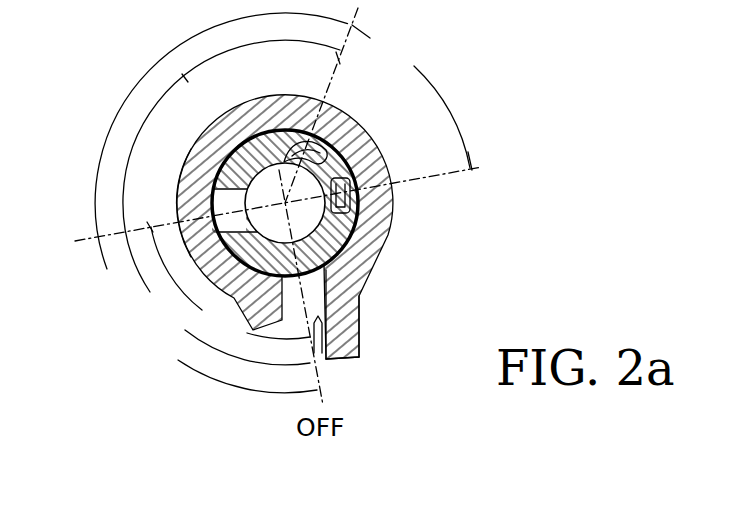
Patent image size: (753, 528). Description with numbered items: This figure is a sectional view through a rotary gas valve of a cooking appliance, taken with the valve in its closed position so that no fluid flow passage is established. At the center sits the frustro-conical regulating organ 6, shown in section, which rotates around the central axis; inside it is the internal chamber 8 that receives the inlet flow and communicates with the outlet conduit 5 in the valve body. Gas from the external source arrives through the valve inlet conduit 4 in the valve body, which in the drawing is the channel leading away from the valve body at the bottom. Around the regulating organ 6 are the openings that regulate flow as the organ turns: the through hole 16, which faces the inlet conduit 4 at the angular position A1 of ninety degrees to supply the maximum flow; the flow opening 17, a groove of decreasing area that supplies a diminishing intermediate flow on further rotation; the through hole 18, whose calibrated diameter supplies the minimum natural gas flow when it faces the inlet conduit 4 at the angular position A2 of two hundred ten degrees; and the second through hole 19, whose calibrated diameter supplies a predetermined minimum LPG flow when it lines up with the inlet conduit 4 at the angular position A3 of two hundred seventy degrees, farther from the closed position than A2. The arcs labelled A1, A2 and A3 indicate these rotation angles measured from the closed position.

The valve inlet conduit 4 is at (312, 300).
The outlet conduit 5 is at (352, 168).
The regulating organ 6 is at (338, 235).
The internal chamber 8 is at (279, 160).
The through hole 16 is at (177, 192).
The flow opening 17 is at (241, 159).
The through hole 18 is at (317, 143).
The second through hole 19 is at (357, 204).
The angular position A1 is at (228, 280).
The angular position A2 is at (231, 202).
The angular position A3 is at (283, 203).